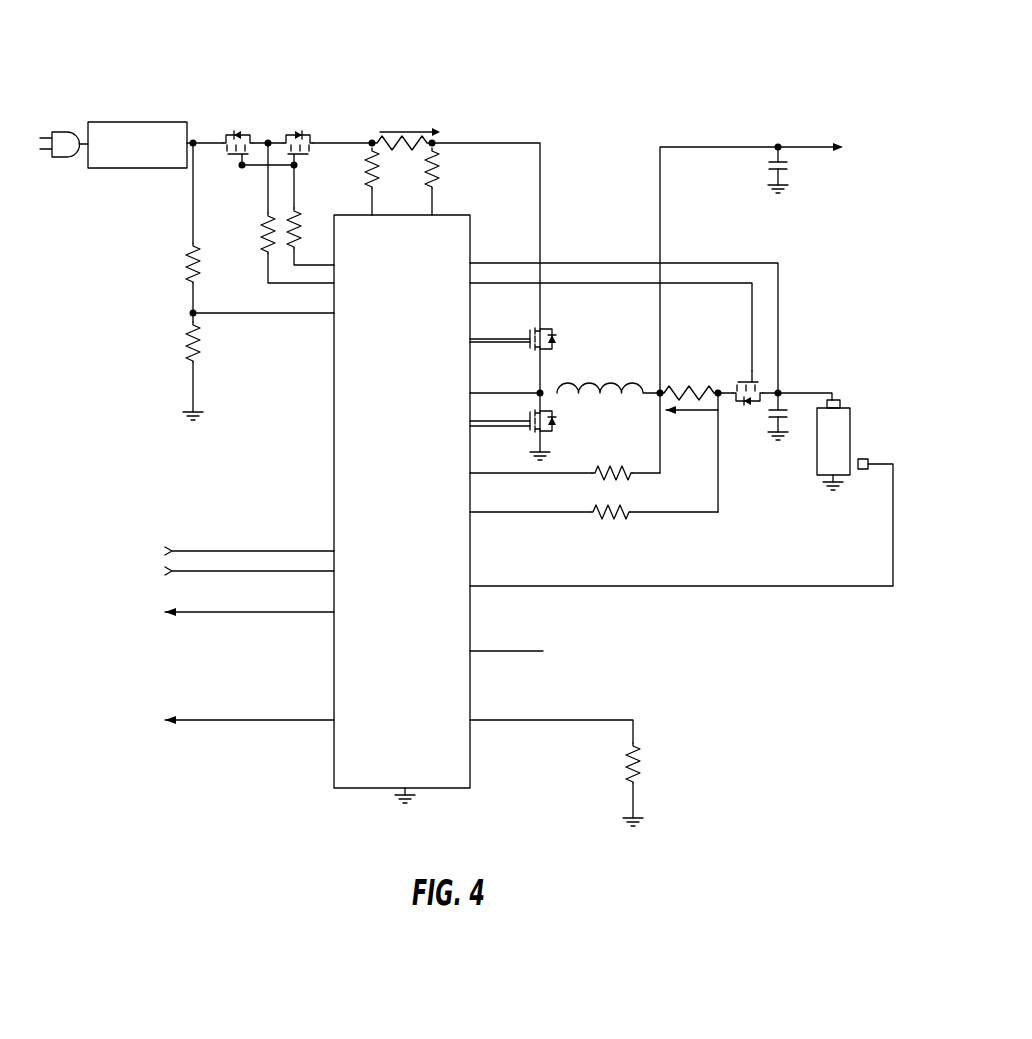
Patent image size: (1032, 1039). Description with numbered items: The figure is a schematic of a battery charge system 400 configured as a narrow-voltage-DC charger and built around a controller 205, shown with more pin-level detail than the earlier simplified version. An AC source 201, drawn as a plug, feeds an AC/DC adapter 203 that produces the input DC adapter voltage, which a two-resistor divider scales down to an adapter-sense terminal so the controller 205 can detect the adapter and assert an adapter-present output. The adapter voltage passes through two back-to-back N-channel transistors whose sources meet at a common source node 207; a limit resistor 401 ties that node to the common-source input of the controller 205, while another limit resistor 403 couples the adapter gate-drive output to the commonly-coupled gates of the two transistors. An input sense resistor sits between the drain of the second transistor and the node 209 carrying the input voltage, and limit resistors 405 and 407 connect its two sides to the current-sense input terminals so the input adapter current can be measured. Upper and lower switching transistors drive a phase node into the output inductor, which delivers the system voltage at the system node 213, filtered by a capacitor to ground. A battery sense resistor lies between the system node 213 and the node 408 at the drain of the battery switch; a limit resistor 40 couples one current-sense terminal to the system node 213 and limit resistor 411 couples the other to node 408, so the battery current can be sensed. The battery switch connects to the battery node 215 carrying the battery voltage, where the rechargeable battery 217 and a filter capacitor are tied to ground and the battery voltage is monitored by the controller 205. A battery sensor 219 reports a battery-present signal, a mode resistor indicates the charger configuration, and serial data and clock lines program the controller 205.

The battery charge system 400 is at (495, 34).
The AC source 201 is at (70, 160).
The AC/DC adapter 203 is at (137, 122).
The common source node 207 is at (268, 143).
The limit resistor 401 is at (262, 226).
The limit resistor 403 is at (302, 220).
The limit resistor 405 is at (367, 167).
The limit resistor 407 is at (440, 170).
The node 209 is at (542, 178).
The system node 213 is at (658, 178).
The controller 205 is at (400, 461).
The node 408 is at (719, 388).
The battery node 215 is at (779, 388).
The rechargeable battery 217 is at (851, 412).
The battery sensor 219 is at (866, 458).
The resistor 40 is at (606, 470).
The limit resistor 411 is at (603, 516).